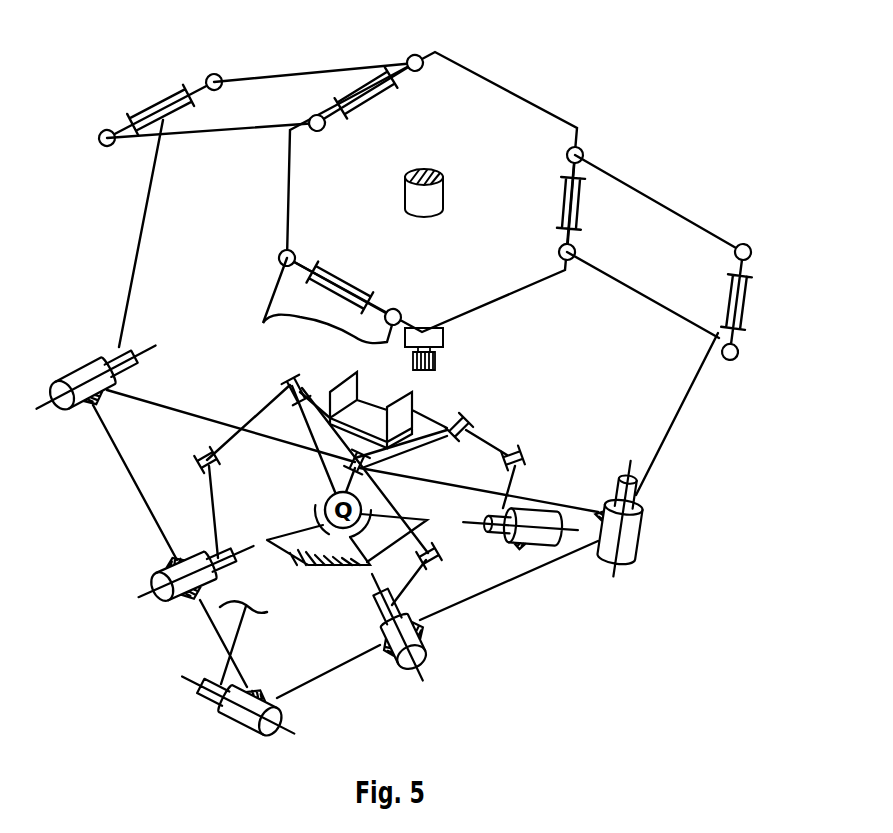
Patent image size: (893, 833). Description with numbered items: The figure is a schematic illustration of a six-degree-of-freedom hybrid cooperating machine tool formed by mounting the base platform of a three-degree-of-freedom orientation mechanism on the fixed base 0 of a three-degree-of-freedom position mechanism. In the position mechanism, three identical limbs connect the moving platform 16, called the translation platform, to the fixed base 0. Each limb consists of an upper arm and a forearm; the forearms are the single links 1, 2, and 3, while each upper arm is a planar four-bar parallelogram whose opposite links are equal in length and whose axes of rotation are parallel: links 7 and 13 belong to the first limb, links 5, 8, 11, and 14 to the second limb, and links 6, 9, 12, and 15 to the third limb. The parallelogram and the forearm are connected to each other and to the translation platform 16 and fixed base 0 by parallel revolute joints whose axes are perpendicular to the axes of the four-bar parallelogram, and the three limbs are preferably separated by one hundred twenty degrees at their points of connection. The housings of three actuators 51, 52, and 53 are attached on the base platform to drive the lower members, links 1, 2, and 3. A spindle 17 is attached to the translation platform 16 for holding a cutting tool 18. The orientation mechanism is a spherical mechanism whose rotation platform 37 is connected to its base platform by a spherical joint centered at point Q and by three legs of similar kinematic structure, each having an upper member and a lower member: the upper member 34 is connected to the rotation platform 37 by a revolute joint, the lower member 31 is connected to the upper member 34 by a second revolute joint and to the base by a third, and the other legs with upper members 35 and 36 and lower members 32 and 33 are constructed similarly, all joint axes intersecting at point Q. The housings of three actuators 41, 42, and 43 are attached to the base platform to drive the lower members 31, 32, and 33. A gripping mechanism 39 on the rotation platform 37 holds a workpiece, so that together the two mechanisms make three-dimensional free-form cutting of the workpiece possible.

The fixed base 0 is at (490, 595).
The forearm link 1 is at (236, 616).
The forearm link 2 is at (687, 400).
The forearm link 3 is at (140, 237).
The parallelogram link 5 is at (758, 268).
The parallelogram link 6 is at (195, 80).
The parallelogram link 7 is at (273, 295).
The parallelogram link 8 is at (640, 300).
The parallelogram link 9 is at (283, 74).
The parallelogram link 11 is at (672, 208).
The parallelogram link 12 is at (222, 130).
The parallelogram link 13 is at (380, 300).
The parallelogram link 14 is at (588, 170).
The parallelogram link 15 is at (337, 113).
The moving platform 16 is at (467, 82).
The spindle 17 is at (447, 338).
The cutting tool 18 is at (437, 360).
The lower member 31 is at (211, 495).
The lower member 32 is at (413, 575).
The lower member 33 is at (532, 477).
The upper member 34 is at (270, 405).
The upper member 35 is at (396, 503).
The upper member 36 is at (488, 430).
The rotation platform 37 is at (325, 400).
The gripping mechanism 39 is at (363, 420).
The actuator 41 is at (160, 566).
The actuator 42 is at (430, 640).
The actuator 43 is at (545, 545).
The actuator 51 is at (232, 720).
The actuator 52 is at (627, 540).
The actuator 53 is at (63, 405).